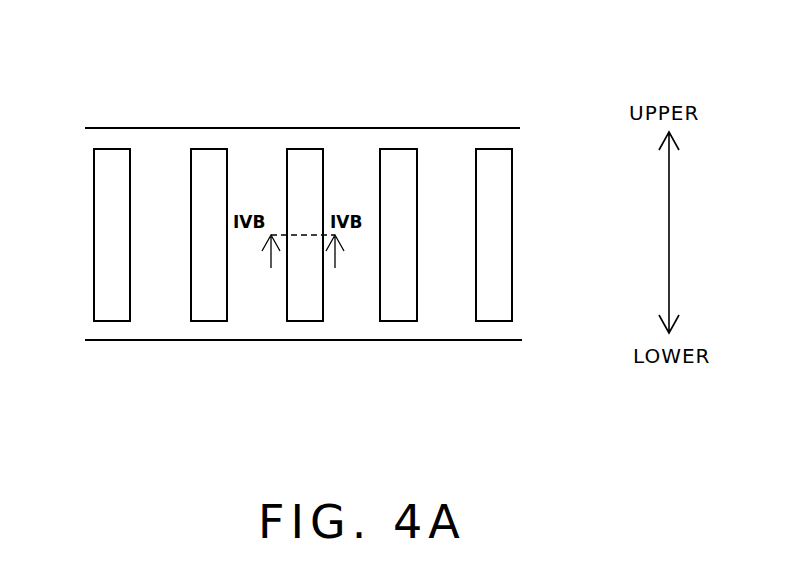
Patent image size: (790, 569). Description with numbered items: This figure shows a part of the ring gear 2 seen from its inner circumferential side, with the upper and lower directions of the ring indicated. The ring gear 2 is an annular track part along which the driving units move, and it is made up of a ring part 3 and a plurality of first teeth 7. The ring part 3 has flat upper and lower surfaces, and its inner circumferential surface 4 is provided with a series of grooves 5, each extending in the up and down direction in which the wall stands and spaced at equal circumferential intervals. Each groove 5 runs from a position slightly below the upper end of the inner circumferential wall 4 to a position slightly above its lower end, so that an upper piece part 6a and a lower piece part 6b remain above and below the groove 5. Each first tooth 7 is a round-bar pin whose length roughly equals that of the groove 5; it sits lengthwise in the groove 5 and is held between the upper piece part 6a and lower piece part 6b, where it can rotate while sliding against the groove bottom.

The ring gear 2 is at (327, 76).
The ring part 3 is at (361, 120).
The inner circumferential surface 4 is at (153, 148).
The groove 5 is at (94, 174).
The upper piece part 6a is at (115, 140).
The lower piece part 6b is at (127, 335).
The first tooth 7 is at (113, 305).